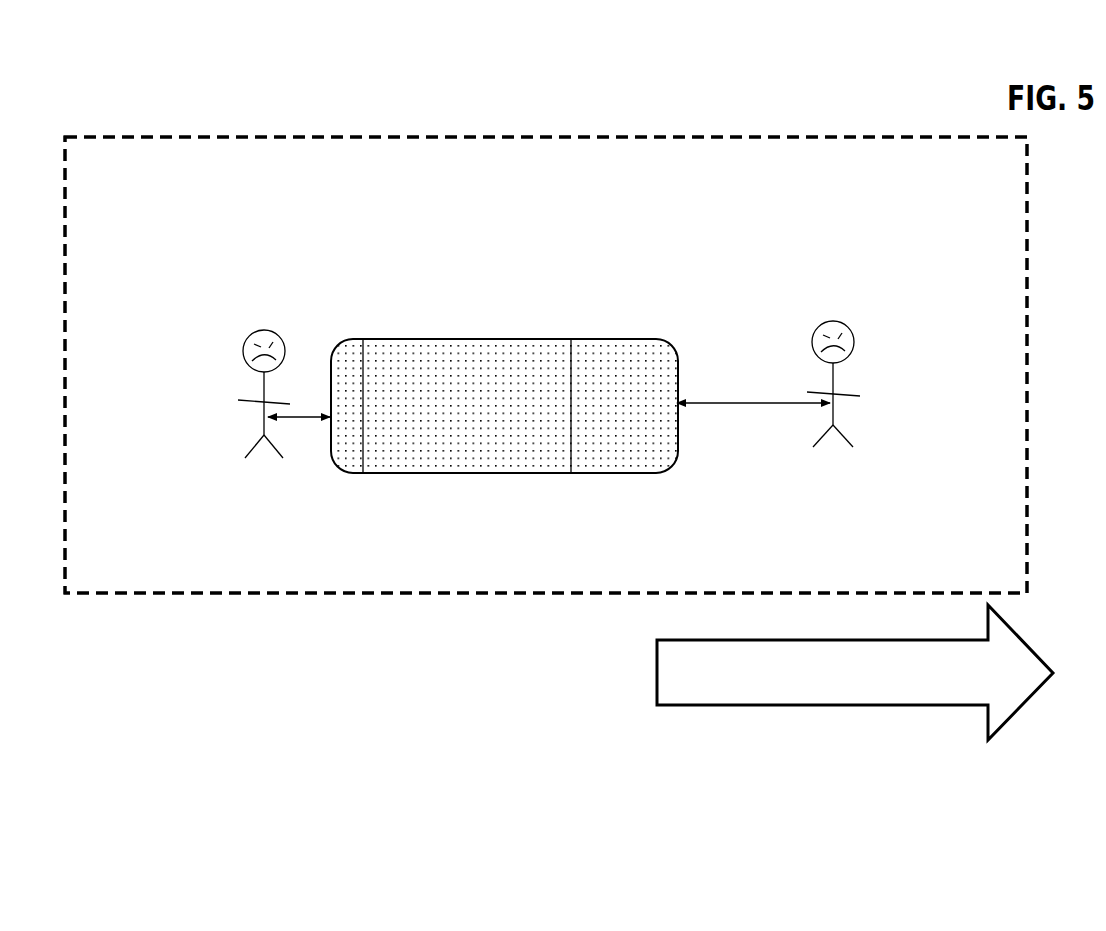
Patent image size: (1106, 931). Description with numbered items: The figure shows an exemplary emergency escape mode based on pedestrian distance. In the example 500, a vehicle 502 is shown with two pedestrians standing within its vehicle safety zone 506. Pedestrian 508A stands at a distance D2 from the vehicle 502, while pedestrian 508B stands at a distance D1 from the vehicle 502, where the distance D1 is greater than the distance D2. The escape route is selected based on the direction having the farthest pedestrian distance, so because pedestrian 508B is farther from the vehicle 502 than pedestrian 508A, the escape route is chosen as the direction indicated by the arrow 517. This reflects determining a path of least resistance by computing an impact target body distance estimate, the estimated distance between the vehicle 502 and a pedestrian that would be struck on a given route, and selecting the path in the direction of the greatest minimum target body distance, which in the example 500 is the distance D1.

The example 500 is at (466, 120).
The vehicle safety zone 506 is at (631, 137).
The vehicle 502 is at (431, 457).
The pedestrian 508A is at (244, 371).
The pedestrian 508B is at (848, 372).
The distance D1 is at (738, 400).
The distance D2 is at (303, 414).
The arrow 517 is at (742, 705).